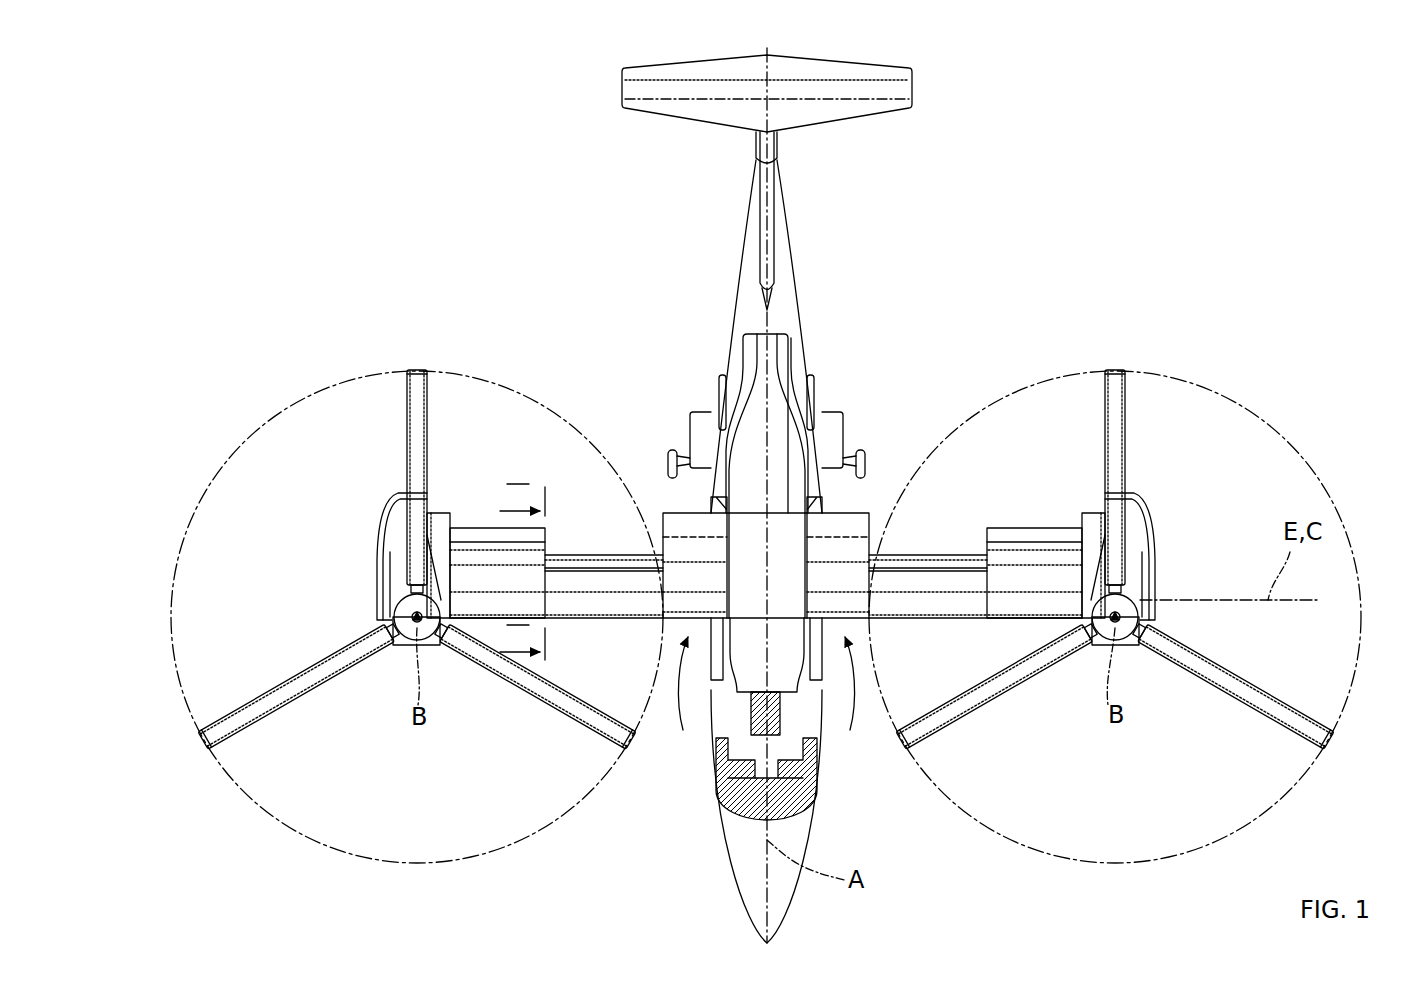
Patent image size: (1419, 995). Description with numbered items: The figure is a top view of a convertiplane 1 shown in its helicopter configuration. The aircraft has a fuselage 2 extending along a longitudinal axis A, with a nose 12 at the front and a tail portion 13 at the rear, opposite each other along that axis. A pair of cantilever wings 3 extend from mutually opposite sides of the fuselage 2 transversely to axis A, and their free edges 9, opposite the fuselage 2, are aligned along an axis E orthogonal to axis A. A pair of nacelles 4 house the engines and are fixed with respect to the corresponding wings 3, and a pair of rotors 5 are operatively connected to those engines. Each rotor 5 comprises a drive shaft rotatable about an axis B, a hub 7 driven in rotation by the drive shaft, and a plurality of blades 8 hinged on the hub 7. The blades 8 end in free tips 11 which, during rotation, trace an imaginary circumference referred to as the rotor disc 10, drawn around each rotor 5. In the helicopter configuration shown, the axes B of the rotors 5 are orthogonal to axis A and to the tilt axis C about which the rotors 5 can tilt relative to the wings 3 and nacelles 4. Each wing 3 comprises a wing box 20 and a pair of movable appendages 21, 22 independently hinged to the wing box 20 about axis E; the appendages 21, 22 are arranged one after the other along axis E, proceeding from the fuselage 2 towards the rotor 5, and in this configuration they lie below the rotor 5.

The convertiplane 1 is at (915, 330).
The fuselage 2 is at (792, 292).
The cantilever wings 3 is at (767, 694).
The nacelles 4 is at (390, 588).
The rotors 5 is at (484, 496).
The hub 7 is at (408, 628).
The blades 8 is at (418, 450).
The free edges 9 is at (420, 565).
The rotor disc 10 is at (572, 812).
The free tips 11 is at (412, 370).
The nose 12 is at (773, 915).
The tail portion 13 is at (787, 90).
The wing box 20 is at (472, 600).
The movable appendage 21 is at (582, 578).
The movable appendage 22 is at (497, 572).